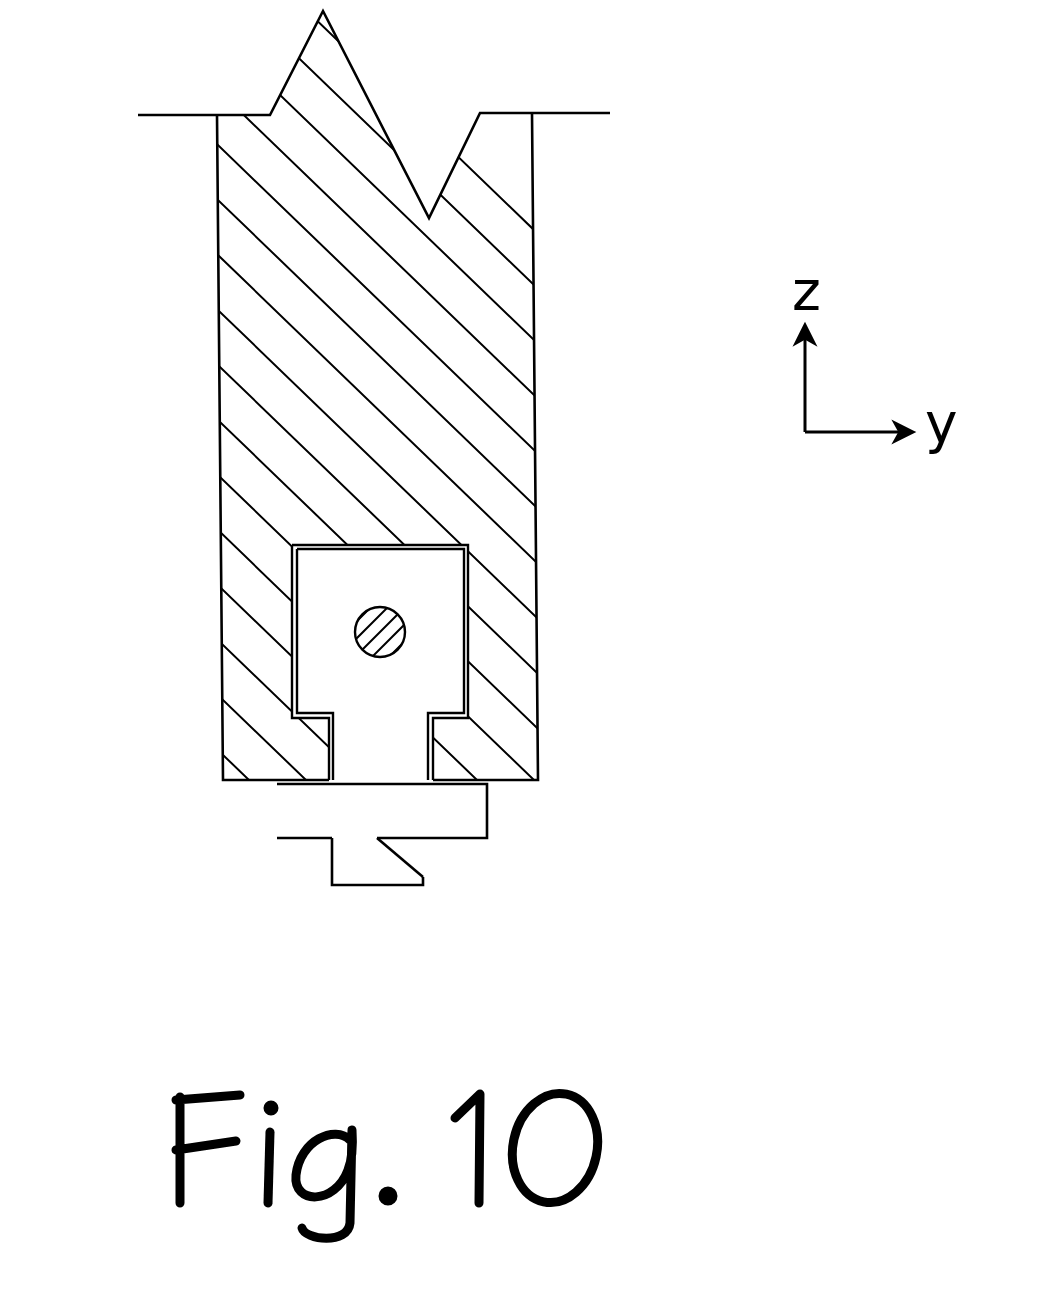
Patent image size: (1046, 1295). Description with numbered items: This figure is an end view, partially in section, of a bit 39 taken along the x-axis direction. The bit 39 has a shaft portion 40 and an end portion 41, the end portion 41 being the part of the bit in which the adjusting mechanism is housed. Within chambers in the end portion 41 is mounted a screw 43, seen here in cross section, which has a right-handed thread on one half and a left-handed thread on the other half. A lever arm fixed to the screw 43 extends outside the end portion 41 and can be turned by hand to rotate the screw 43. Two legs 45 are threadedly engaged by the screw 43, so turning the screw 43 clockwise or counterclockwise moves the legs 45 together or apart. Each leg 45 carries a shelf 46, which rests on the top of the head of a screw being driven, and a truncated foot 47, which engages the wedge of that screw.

The bit 39 is at (383, 642).
The shaft portion 40 is at (217, 193).
The end portion 41 is at (222, 572).
The screw 43 is at (405, 623).
The leg 45 is at (330, 853).
The shelf 46 is at (463, 838).
The truncated foot 47 is at (397, 870).